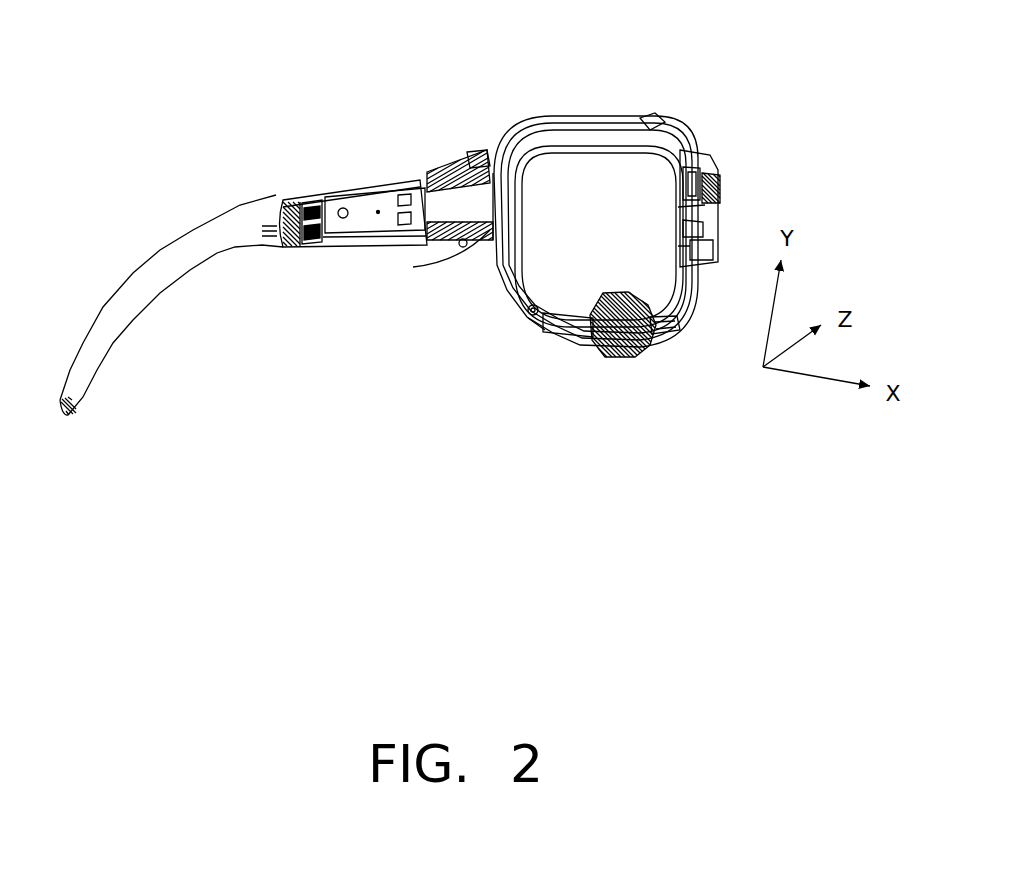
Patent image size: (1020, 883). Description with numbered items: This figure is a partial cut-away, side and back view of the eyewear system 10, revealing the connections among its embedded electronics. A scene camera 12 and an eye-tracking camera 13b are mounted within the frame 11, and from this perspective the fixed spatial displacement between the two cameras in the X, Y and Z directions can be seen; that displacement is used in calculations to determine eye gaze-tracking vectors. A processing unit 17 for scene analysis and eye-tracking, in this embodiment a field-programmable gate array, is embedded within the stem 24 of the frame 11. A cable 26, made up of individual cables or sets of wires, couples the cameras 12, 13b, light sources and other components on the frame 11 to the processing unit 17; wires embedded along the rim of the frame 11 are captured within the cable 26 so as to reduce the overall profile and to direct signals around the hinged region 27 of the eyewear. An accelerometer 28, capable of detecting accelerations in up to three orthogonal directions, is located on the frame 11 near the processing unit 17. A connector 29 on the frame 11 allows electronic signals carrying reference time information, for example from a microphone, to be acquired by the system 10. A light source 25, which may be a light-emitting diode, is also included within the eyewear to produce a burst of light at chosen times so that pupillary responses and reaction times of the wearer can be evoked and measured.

The system 10 is at (572, 66).
The frame 11 is at (527, 114).
The scene camera 12 is at (725, 186).
The eye-tracking camera 13b is at (600, 357).
The processing unit 17 is at (308, 194).
The stem 24 is at (156, 235).
The light source 25 is at (527, 328).
The cable 26 is at (462, 233).
The hinged region 27 is at (468, 174).
The accelerometer 28 is at (343, 194).
The connector 29 is at (266, 211).